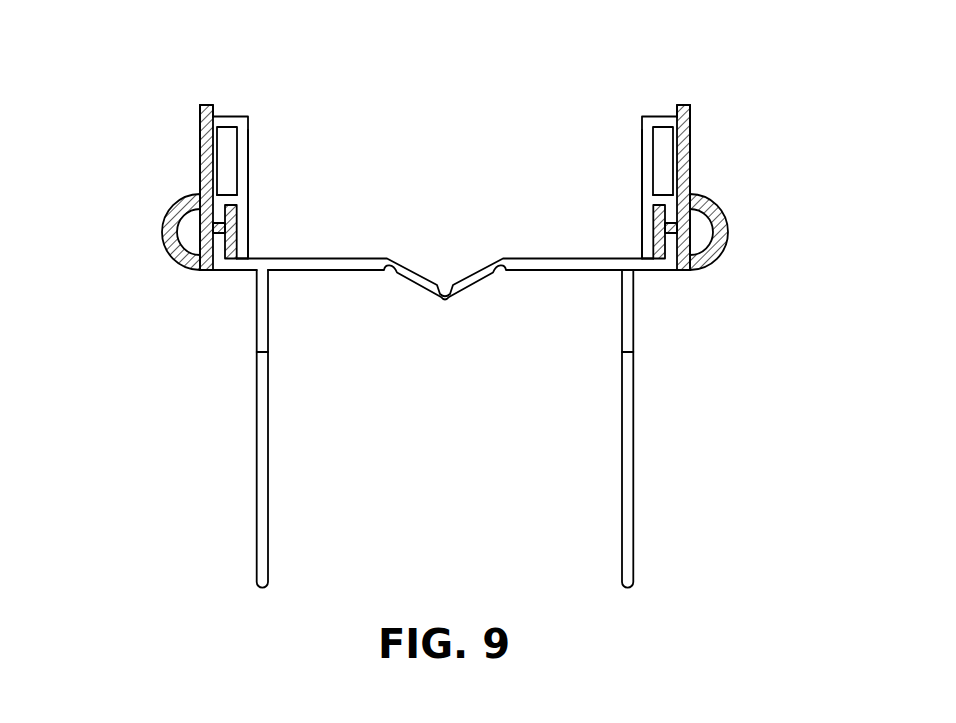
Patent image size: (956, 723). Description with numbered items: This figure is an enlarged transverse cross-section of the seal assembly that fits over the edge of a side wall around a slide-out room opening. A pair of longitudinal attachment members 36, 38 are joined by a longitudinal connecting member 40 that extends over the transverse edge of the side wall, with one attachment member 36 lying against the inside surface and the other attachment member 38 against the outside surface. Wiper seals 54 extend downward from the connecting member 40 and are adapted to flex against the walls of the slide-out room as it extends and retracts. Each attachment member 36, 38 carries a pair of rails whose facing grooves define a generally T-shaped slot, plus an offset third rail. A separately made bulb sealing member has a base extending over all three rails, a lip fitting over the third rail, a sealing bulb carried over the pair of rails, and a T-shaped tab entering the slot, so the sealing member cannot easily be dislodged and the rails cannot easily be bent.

The attachment member 36 is at (264, 148).
The attachment member 38 is at (628, 150).
The connecting member 40 is at (335, 267).
The wiper seals 54 is at (622, 508).